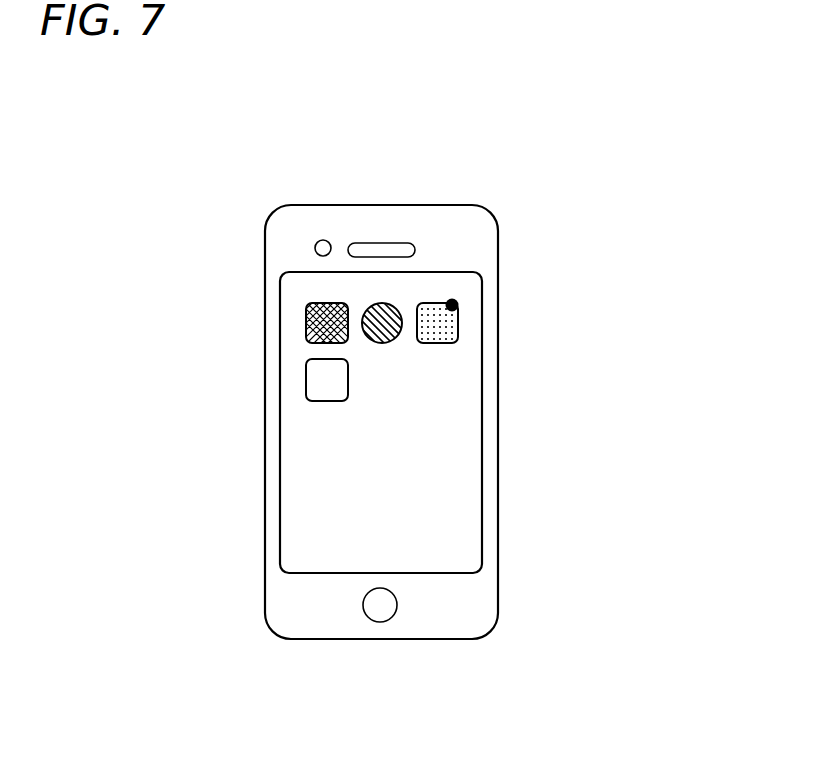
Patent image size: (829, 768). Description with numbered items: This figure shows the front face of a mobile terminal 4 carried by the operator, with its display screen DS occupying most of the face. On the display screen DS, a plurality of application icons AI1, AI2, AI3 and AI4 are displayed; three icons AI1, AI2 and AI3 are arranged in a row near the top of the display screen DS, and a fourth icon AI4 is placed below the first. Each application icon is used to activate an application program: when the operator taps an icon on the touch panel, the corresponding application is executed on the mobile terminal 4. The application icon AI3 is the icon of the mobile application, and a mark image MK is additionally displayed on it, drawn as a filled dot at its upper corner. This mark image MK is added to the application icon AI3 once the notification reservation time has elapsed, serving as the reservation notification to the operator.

The mobile terminal 4 is at (440, 205).
The display screen DS is at (482, 442).
The application icon AI1 is at (323, 300).
The application icon AI2 is at (382, 303).
The application icon AI3 is at (447, 302).
The application icon AI4 is at (322, 380).
The mark image MK is at (458, 304).